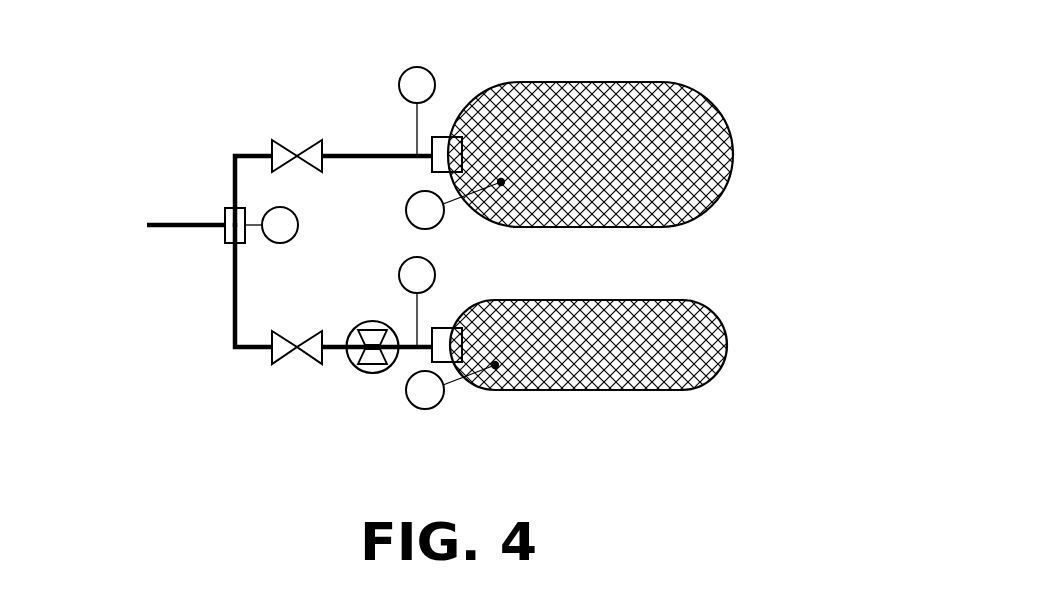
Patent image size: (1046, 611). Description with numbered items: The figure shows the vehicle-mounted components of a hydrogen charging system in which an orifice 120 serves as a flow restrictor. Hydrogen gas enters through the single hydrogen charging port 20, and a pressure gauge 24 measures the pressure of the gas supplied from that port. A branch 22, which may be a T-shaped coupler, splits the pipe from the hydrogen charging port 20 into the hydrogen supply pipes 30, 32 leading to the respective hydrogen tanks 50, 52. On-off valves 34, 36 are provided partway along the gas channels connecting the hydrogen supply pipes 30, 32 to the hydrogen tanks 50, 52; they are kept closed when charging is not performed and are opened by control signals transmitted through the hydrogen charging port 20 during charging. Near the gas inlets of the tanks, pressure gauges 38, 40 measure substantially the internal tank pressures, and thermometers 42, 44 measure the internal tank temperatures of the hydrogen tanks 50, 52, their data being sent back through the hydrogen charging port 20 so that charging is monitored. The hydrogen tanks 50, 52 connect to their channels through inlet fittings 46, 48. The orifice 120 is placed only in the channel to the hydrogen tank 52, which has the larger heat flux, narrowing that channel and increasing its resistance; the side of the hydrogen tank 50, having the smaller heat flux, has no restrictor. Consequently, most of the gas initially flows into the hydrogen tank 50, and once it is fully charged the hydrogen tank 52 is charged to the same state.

The hydrogen charging port 20 is at (156, 225).
The branch 22 is at (230, 238).
The pressure gauge 24 is at (280, 243).
The hydrogen supply pipe 30 is at (240, 153).
The hydrogen supply pipe 32 is at (250, 350).
The on-off valve 34 is at (288, 139).
The on-off valve 36 is at (289, 365).
The pressure gauge 38 is at (408, 71).
The pressure gauge 40 is at (399, 275).
The thermometer 42 is at (406, 210).
The thermometer 44 is at (425, 409).
The first tank inlet port 46 is at (440, 137).
The second tank inlet port 48 is at (440, 328).
The hydrogen tank 50 is at (660, 82).
The hydrogen tank 52 is at (660, 300).
The orifice 120 is at (373, 373).